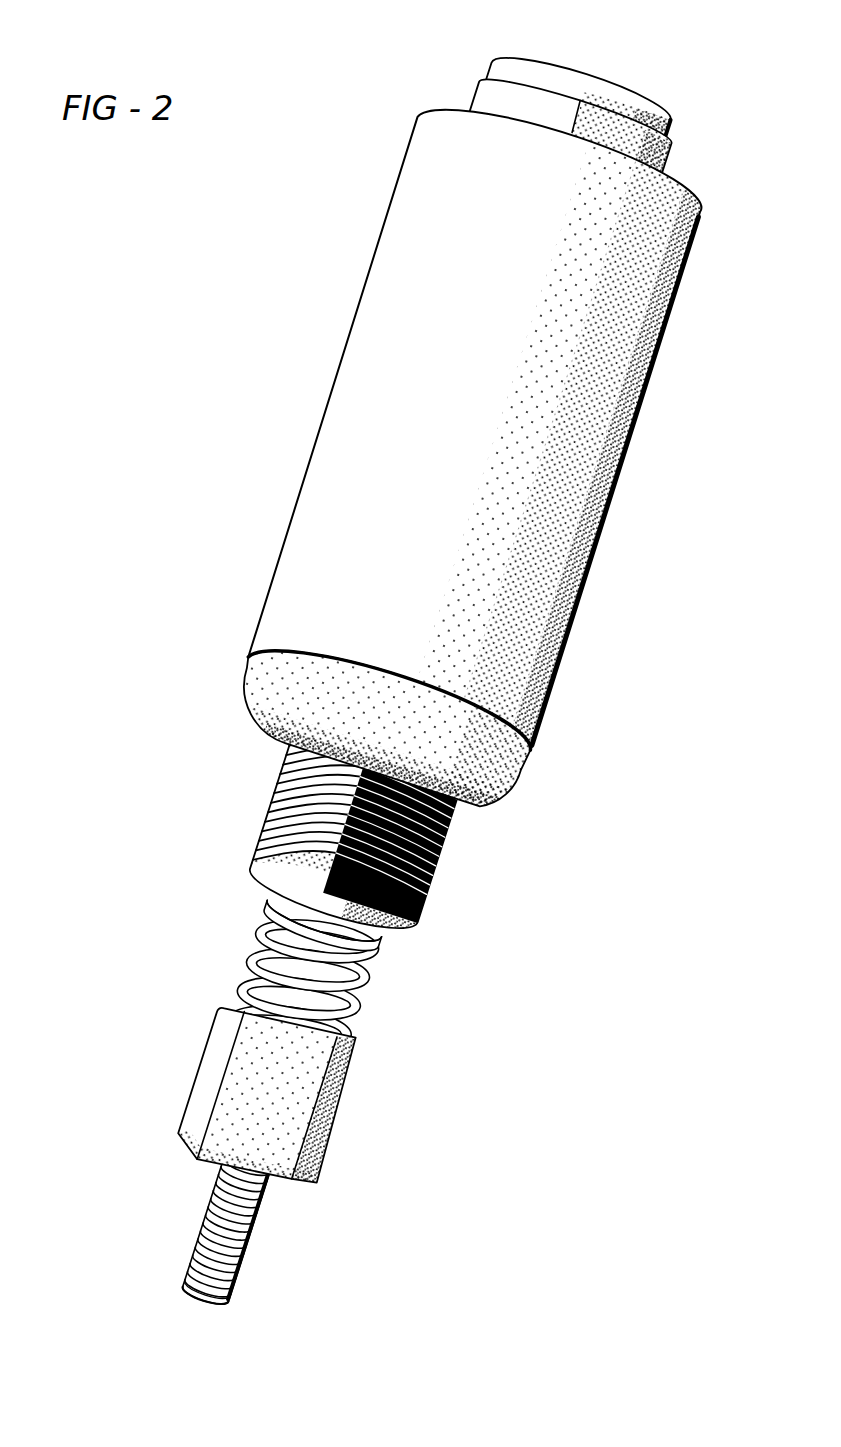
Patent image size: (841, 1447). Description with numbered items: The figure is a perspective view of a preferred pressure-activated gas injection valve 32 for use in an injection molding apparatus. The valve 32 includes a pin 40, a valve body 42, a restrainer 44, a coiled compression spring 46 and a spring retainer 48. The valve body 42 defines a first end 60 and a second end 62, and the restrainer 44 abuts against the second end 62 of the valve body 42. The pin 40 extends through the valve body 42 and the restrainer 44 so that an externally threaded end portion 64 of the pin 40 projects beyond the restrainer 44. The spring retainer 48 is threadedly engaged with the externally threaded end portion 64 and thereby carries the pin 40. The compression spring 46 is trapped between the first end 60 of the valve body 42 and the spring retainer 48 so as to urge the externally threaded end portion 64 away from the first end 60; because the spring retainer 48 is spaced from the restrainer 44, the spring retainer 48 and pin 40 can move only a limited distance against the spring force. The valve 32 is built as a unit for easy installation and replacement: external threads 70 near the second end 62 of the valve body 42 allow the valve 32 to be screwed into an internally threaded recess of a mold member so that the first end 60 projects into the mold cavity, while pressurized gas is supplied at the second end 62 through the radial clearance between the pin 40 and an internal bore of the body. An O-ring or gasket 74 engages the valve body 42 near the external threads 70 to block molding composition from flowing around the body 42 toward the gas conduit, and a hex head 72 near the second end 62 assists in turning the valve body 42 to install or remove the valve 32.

The gas injection valve 32 is at (330, 390).
The pin 40 is at (203, 1217).
The valve body 42 is at (303, 555).
The restrainer 44 is at (260, 930).
The coiled compression spring 46 is at (247, 988).
The spring retainer 48 is at (237, 1080).
The first end 60 is at (630, 82).
The second end 62 is at (260, 890).
The externally threaded end portion 64 is at (240, 1270).
The external threads 70 is at (280, 780).
The hex head 72 is at (495, 100).
The O-ring or gasket 74 is at (270, 702).